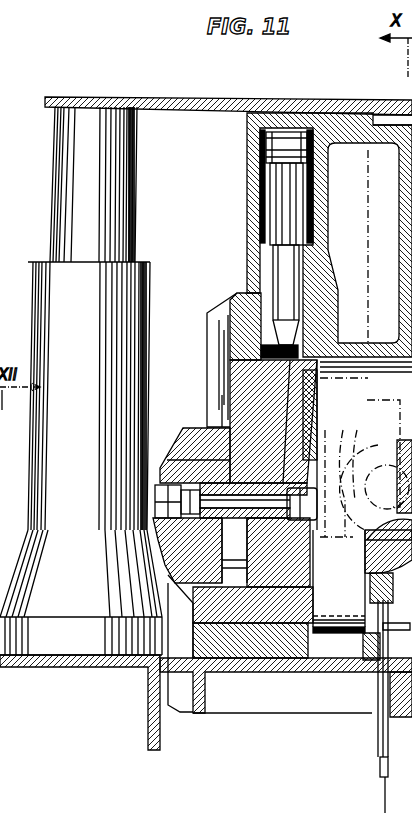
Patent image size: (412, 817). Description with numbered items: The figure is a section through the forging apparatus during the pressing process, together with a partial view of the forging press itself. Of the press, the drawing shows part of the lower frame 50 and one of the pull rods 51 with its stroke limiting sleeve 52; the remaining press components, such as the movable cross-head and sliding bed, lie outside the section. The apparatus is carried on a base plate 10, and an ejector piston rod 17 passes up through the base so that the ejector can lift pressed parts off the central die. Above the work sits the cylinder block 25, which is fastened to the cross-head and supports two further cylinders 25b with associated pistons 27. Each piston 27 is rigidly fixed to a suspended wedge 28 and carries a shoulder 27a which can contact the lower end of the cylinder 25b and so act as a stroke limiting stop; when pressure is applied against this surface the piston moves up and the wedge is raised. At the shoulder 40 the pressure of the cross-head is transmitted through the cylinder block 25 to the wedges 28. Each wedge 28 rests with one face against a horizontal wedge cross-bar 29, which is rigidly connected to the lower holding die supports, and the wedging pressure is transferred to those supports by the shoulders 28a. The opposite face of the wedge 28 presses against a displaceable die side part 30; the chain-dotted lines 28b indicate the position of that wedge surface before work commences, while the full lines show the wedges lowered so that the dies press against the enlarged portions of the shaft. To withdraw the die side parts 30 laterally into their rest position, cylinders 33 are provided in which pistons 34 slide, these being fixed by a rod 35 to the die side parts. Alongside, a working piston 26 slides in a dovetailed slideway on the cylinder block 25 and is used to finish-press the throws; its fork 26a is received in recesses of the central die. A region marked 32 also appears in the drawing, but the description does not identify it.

The base plate 10 is at (238, 668).
The ejector piston rod 17 is at (380, 740).
The cylinder block 25 is at (343, 120).
The cylinders 25b is at (260, 227).
The working piston 26 is at (322, 398).
The fork 26a is at (312, 667).
The pistons 27 is at (294, 192).
The shoulders 27a is at (262, 168).
The wedges 28 is at (205, 370).
The shoulders 28a is at (317, 442).
The chain-dotted lines 28b is at (258, 416).
The wedge cross-bars 29 is at (185, 440).
The die side parts 30 is at (253, 570).
The cam region 32 is at (362, 595).
The cylinders 33 is at (160, 482).
The pistons 34 is at (187, 615).
The rod 35 is at (238, 510).
The shoulder 40 is at (247, 289).
The lower frame 50 is at (152, 686).
The pull rods 51 is at (58, 156).
The stroke limiting sleeves 52 is at (36, 284).